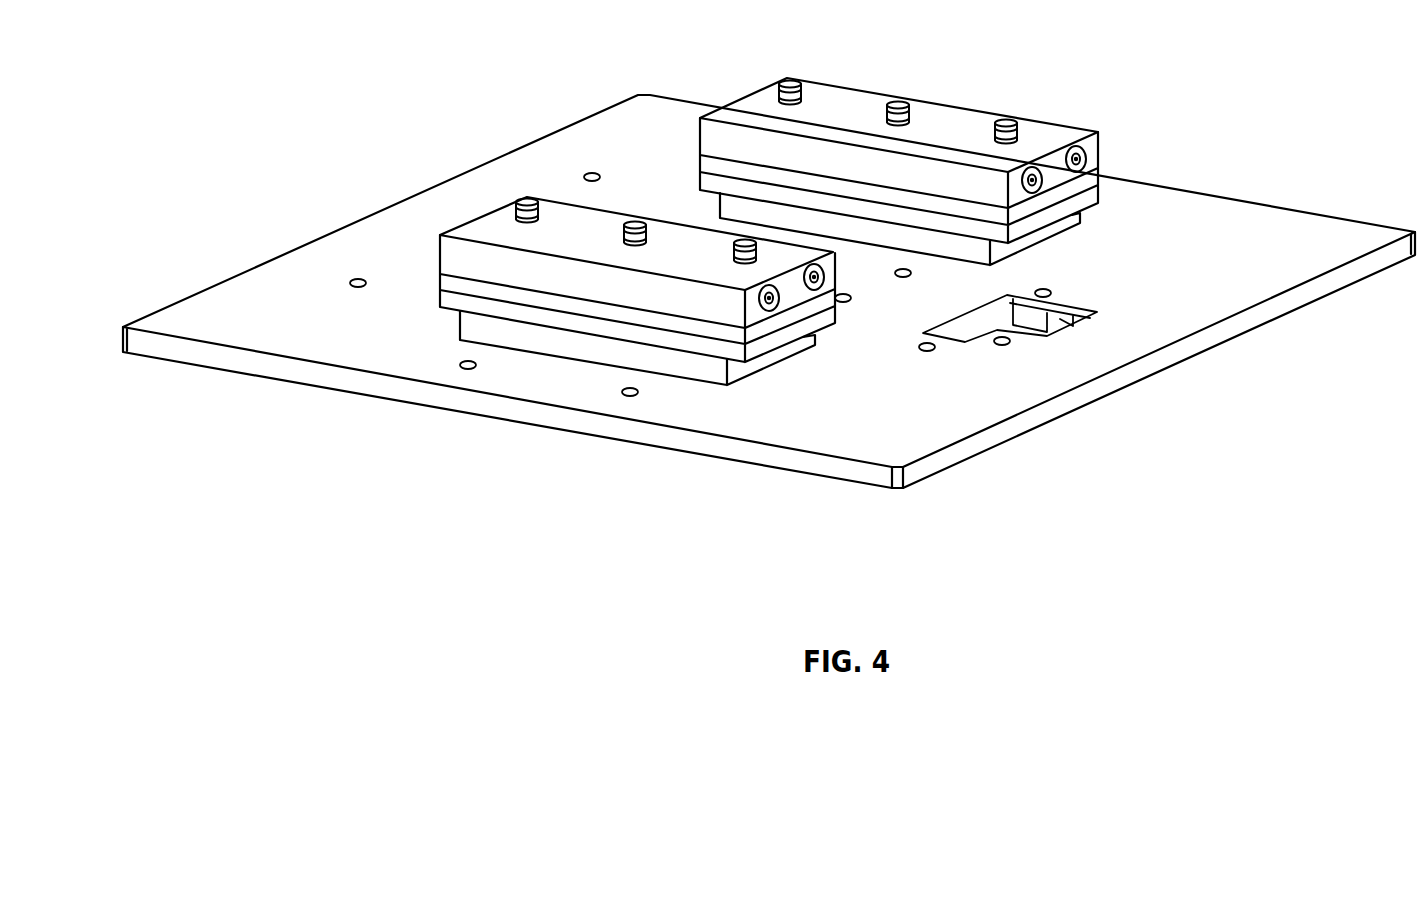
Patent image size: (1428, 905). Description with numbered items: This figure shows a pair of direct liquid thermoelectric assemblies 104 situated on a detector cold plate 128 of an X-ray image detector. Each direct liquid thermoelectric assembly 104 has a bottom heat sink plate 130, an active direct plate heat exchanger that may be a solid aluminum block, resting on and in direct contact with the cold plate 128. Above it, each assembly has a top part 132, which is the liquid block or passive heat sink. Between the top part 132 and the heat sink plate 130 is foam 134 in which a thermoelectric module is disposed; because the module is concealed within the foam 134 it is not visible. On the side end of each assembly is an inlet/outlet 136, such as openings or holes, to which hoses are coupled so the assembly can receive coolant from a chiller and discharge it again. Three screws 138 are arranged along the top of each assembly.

The direct liquid thermoelectric assembly 104 is at (456, 200).
The detector cold plate 128 is at (213, 358).
The heat sink plate 130 is at (563, 341).
The top part 132 is at (462, 264).
The foam 134 is at (690, 328).
The inlet/outlet 136 is at (770, 300).
The screws 138 is at (790, 80).